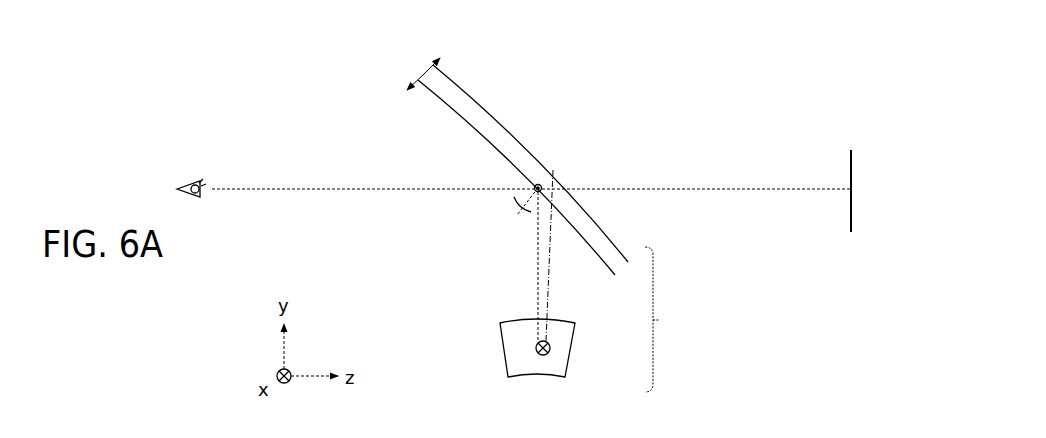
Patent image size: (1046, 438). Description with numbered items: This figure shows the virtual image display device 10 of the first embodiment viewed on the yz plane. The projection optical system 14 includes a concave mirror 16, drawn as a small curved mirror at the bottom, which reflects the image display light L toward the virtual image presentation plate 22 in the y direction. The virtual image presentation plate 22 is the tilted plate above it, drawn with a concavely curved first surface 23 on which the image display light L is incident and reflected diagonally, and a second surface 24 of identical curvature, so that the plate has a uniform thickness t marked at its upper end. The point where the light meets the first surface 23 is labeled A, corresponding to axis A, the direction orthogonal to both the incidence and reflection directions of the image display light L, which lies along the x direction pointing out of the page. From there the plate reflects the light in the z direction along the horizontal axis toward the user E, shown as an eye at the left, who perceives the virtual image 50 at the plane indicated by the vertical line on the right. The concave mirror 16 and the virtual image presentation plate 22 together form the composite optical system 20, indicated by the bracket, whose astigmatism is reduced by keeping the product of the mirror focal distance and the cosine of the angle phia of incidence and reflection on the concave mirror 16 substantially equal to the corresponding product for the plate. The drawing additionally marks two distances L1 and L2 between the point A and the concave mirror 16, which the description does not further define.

The virtual image display device 10 is at (424, 336).
The projection optical system 14 is at (464, 312).
The concave mirror 16 is at (503, 352).
The composite optical system 20 is at (671, 319).
The virtual image presentation plate 22 is at (505, 148).
The first surface 23 is at (448, 108).
The second surface 24 is at (480, 98).
The virtual image 50 is at (856, 128).
The axis A is at (539, 182).
The user E is at (186, 177).
The image display light L is at (562, 306).
The distance L1 is at (538, 302).
The distance L2 is at (549, 264).
The thickness t is at (414, 70).
The angle of incidence and reflection on the concave mirror phia is at (518, 196).